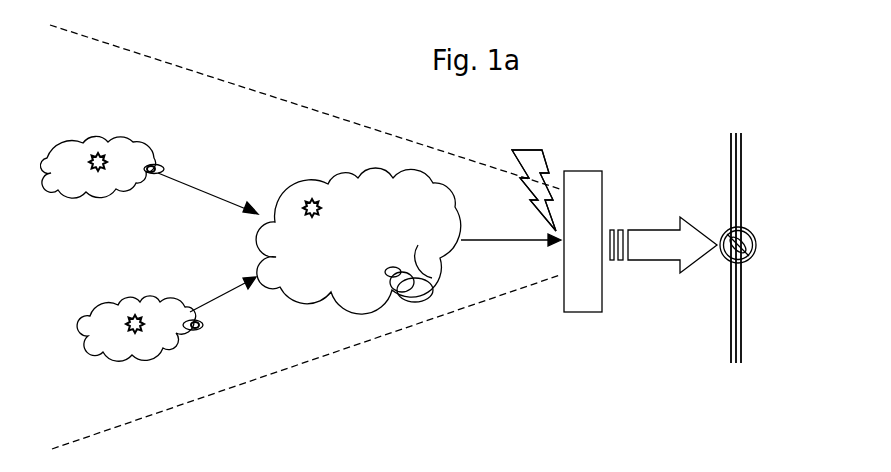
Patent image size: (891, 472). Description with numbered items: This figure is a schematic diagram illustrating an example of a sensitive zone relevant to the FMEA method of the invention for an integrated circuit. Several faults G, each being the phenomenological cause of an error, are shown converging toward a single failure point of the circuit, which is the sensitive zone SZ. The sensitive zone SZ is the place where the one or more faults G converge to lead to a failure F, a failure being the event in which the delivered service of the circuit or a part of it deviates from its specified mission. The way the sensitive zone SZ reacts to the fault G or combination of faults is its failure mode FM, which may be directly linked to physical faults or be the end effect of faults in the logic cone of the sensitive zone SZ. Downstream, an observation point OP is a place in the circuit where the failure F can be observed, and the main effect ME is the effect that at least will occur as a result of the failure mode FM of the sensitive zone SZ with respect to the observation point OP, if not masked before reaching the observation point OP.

The fault G is at (250, 221).
The failure F is at (517, 169).
The failure mode FM is at (534, 190).
The sensitive zone SZ is at (582, 284).
The observation point OP is at (732, 222).
The main effect ME is at (768, 244).